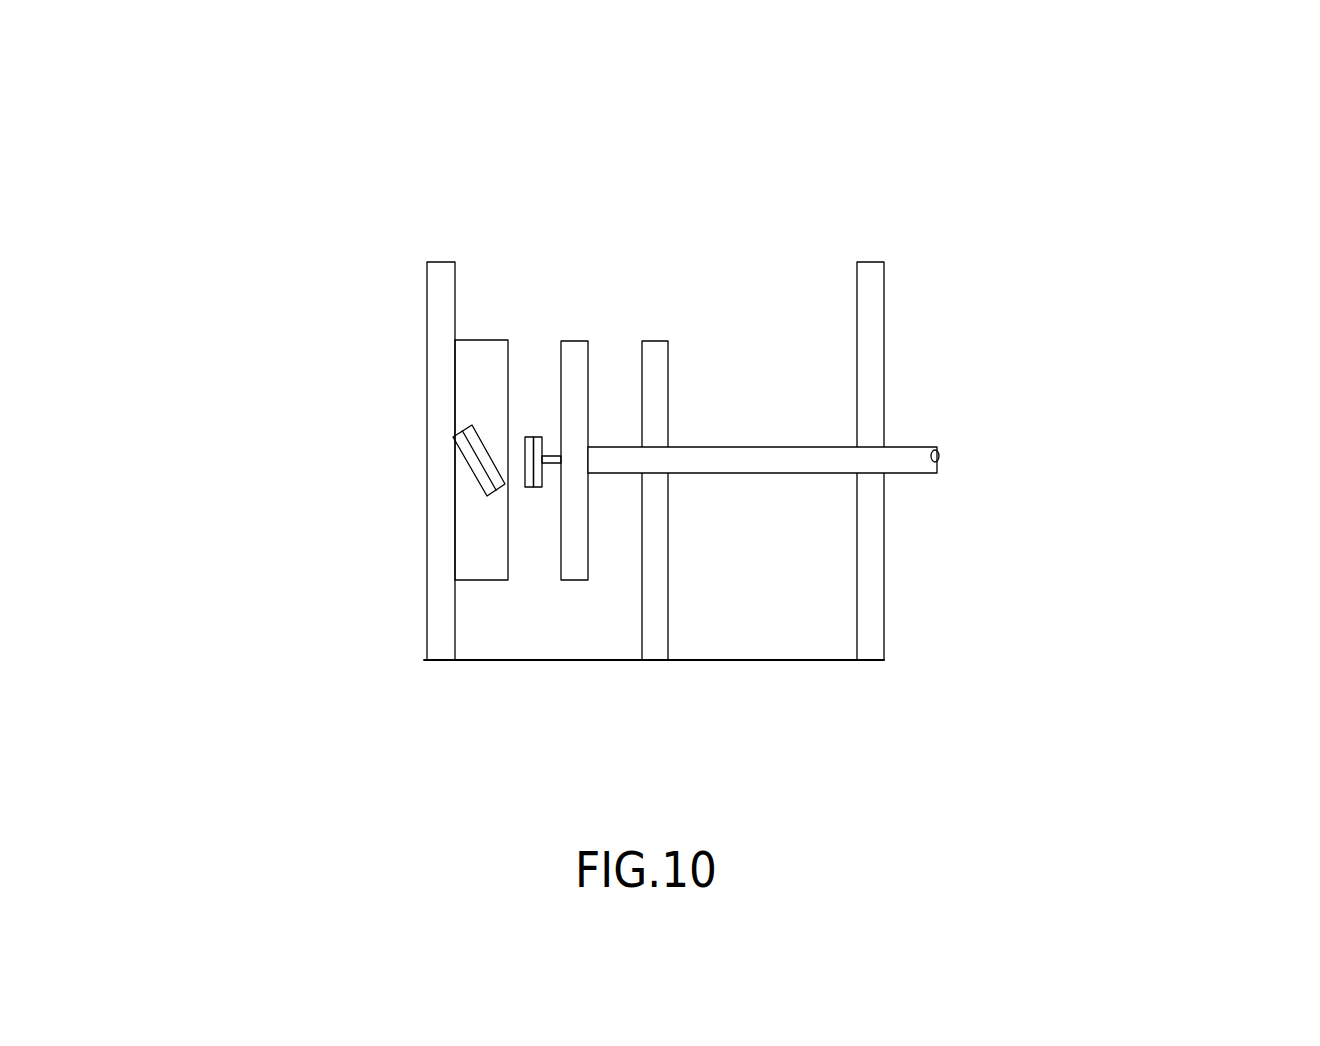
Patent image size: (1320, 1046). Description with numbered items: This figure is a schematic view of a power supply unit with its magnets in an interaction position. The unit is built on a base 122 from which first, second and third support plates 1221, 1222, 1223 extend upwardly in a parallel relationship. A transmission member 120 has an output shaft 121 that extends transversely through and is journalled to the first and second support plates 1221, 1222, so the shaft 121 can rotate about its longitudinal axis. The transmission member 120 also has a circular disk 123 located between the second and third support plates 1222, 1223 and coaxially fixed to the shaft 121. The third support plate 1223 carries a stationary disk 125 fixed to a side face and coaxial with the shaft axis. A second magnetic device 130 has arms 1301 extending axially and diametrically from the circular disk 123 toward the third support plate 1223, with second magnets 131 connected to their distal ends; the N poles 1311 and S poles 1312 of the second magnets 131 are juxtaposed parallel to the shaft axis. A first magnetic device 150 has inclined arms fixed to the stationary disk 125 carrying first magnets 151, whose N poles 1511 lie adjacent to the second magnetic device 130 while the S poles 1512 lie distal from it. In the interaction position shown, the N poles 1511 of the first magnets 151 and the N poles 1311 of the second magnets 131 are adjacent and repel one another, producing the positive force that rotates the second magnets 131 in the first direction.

The transmission member 120 is at (954, 376).
The output shaft 121 is at (908, 465).
The base 122 is at (735, 660).
The first support plate 1221 is at (873, 347).
The second support plate 1222 is at (663, 375).
The third support plate 1223 is at (443, 262).
The circular disk 123 is at (577, 542).
The disk 125 is at (482, 340).
The second magnetic device 130 is at (514, 456).
The arm 1301 is at (553, 455).
The second magnet 131 is at (470, 442).
The N pole 1311 is at (523, 477).
The S pole 1312 is at (543, 440).
The first magnetic device 150 is at (352, 339).
The first magnet 151 is at (345, 391).
The N pole 1511 is at (484, 457).
The S pole 1512 is at (455, 438).